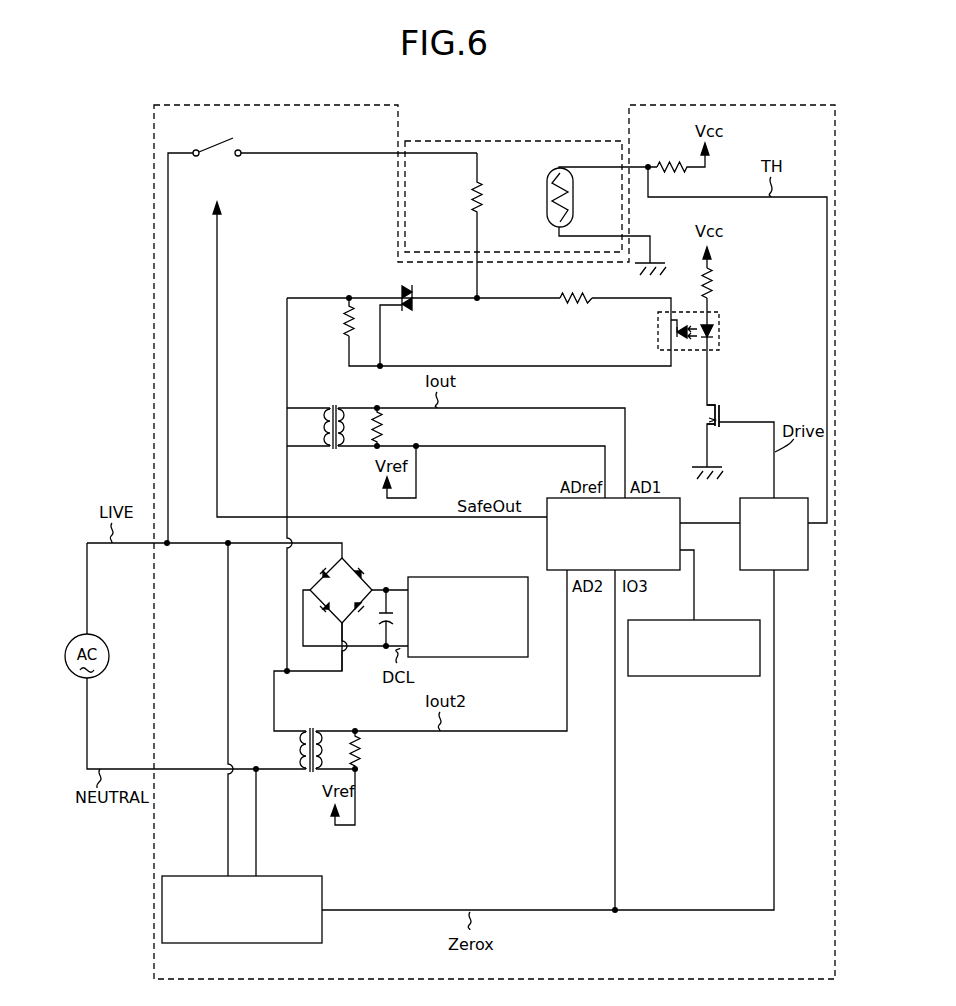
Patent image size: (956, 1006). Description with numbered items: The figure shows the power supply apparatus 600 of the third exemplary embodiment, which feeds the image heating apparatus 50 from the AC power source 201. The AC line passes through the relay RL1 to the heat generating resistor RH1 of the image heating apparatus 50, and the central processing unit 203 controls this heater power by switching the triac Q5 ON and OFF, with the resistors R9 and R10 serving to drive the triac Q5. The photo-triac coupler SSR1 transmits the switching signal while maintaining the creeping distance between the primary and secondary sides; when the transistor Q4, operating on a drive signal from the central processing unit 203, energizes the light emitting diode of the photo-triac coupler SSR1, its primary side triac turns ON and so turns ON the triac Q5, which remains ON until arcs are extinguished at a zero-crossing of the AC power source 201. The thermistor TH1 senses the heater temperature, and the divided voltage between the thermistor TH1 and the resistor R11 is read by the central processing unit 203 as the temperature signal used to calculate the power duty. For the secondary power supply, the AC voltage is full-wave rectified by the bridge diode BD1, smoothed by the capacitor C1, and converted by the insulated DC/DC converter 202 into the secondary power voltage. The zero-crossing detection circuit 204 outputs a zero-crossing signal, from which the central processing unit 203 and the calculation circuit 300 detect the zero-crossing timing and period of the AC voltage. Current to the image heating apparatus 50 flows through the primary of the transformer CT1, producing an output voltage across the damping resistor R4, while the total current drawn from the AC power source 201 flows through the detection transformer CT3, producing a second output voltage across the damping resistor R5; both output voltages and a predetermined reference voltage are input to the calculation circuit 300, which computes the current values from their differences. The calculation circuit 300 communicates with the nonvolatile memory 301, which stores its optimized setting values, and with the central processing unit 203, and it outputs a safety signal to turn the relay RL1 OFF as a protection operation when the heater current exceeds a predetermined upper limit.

The power supply apparatus 600 is at (153, 208).
The image heating apparatus 50 is at (543, 141).
The relay RL1 is at (238, 158).
The heat generating resistor RH1 is at (472, 203).
The thermistor TH1 is at (597, 199).
The resistor R11 is at (670, 160).
The resistor R9 is at (347, 326).
The triac Q5 is at (405, 312).
The resistor R10 is at (577, 304).
The photo-triac coupler SSR1 is at (719, 331).
The transistor Q4 is at (722, 407).
The transformer CT1 is at (330, 406).
The damping resistor R4 is at (383, 427).
The bridge diode BD1 is at (357, 568).
The capacitor C1 is at (392, 610).
The DC/DC converter 202 is at (505, 658).
The detection transformer CT3 is at (305, 730).
The damping resistor R5 is at (361, 750).
The AC power source 201 is at (110, 639).
The calculation circuit 300 is at (547, 553).
The CPU 203 is at (797, 570).
The nonvolatile memory 301 is at (693, 676).
The zero-crossing detection circuit 204 is at (295, 876).